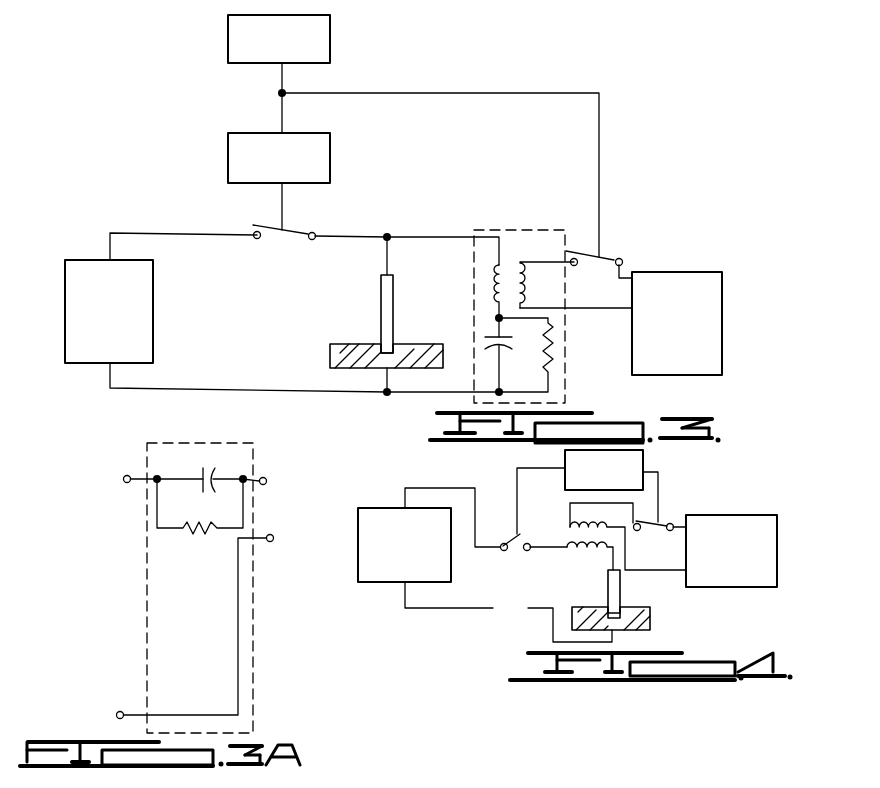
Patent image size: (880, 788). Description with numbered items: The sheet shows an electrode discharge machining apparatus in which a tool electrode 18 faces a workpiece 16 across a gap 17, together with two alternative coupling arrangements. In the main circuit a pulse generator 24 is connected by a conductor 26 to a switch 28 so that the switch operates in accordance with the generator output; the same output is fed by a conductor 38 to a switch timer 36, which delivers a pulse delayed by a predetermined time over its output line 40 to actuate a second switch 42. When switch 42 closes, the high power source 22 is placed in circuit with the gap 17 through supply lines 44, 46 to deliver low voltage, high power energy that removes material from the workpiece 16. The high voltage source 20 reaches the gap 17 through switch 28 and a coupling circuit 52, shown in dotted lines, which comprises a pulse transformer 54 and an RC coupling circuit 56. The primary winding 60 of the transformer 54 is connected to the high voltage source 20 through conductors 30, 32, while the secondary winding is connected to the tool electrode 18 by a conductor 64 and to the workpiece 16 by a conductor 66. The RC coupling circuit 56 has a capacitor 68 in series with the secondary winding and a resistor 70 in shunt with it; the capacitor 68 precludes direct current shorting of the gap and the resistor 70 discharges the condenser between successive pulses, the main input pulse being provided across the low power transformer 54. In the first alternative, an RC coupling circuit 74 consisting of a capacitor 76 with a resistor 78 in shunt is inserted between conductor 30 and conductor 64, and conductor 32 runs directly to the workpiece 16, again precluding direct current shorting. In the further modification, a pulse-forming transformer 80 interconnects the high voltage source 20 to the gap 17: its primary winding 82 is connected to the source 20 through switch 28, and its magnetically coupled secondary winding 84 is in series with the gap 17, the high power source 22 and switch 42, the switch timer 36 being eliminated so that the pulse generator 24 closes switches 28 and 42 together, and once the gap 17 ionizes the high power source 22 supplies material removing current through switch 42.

In FIG. 3, the workpiece 16 is at (425, 346).
In FIG. 3, the gap 17 is at (398, 330).
In FIG. 4, the gap 17 is at (622, 602).
In FIG. 3, the tool electrode 18 is at (395, 302).
In FIG. 3, the high voltage source 20 is at (703, 272).
In FIG. 4, the high voltage source 20 is at (746, 515).
In FIG. 3, the high power source 22 is at (145, 290).
In FIG. 4, the high power source 22 is at (373, 520).
In FIG. 3, the pulse generator 24 is at (332, 46).
In FIG. 4, the pulse generator 24 is at (643, 462).
In FIG. 3, the conductor 26 is at (380, 97).
In FIG. 3, the switch 28 is at (602, 250).
In FIG. 4, the switch 28 is at (667, 520).
In FIG. 3, the conductor 30 is at (574, 267).
In FIG. 3A, the conductor 30 is at (262, 476).
In FIG. 3, the conductor 32 is at (576, 312).
In FIG. 3A, the conductor 32 is at (240, 650).
In FIG. 3, the switch timer 36 is at (332, 167).
In FIG. 3, the conductor 38 is at (285, 120).
In FIG. 3, the timer output line 40 is at (285, 209).
In FIG. 3, the switch 42 is at (292, 238).
In FIG. 4, the switch 42 is at (505, 534).
In FIG. 3, the negative supply line 44 is at (168, 231).
In FIG. 3, the positive supply line 46 is at (205, 386).
In FIG. 3, the coupling circuit 52 is at (527, 228).
In FIG. 3, the pulse transformer 54 is at (506, 258).
In FIG. 3, the RC coupling circuit 56 is at (554, 359).
In FIG. 3, the primary winding 60 is at (530, 259).
In FIG. 3, the conductor 64 is at (406, 235).
In FIG. 3A, the conductor 64 is at (138, 481).
In FIG. 3, the conductor 66 is at (405, 395).
In FIG. 3, the capacitor 68 is at (508, 346).
In FIG. 3, the resistor 70 is at (556, 347).
In FIG. 3A, the RC coupling circuit 74 is at (224, 505).
In FIG. 3A, the capacitor 76 is at (211, 464).
In FIG. 3A, the resistor 78 is at (213, 533).
In FIG. 4, the pulse-forming transformer 80 is at (566, 540).
In FIG. 4, the primary winding 82 is at (572, 522).
In FIG. 4, the secondary winding 84 is at (600, 551).